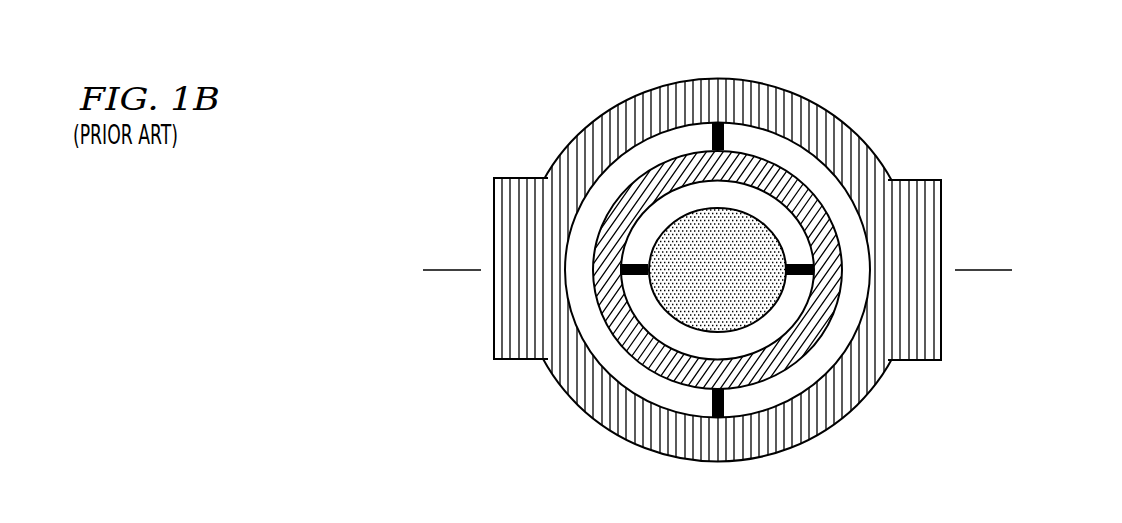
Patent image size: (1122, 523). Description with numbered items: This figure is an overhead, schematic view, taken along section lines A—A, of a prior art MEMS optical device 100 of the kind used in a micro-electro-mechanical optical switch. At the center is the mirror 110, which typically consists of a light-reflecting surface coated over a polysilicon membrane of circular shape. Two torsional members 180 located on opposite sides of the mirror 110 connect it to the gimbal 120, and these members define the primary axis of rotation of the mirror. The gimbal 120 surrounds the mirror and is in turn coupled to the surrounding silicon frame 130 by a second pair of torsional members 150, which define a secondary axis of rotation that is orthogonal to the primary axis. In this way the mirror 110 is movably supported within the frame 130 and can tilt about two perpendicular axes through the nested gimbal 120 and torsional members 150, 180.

The MEMS optical device 100 is at (435, 133).
The mirror 110 is at (732, 283).
The gimbal 120 is at (783, 360).
The silicon frame 130 is at (930, 225).
The torsional members 150 is at (725, 138).
The torsional members 180 is at (637, 263).